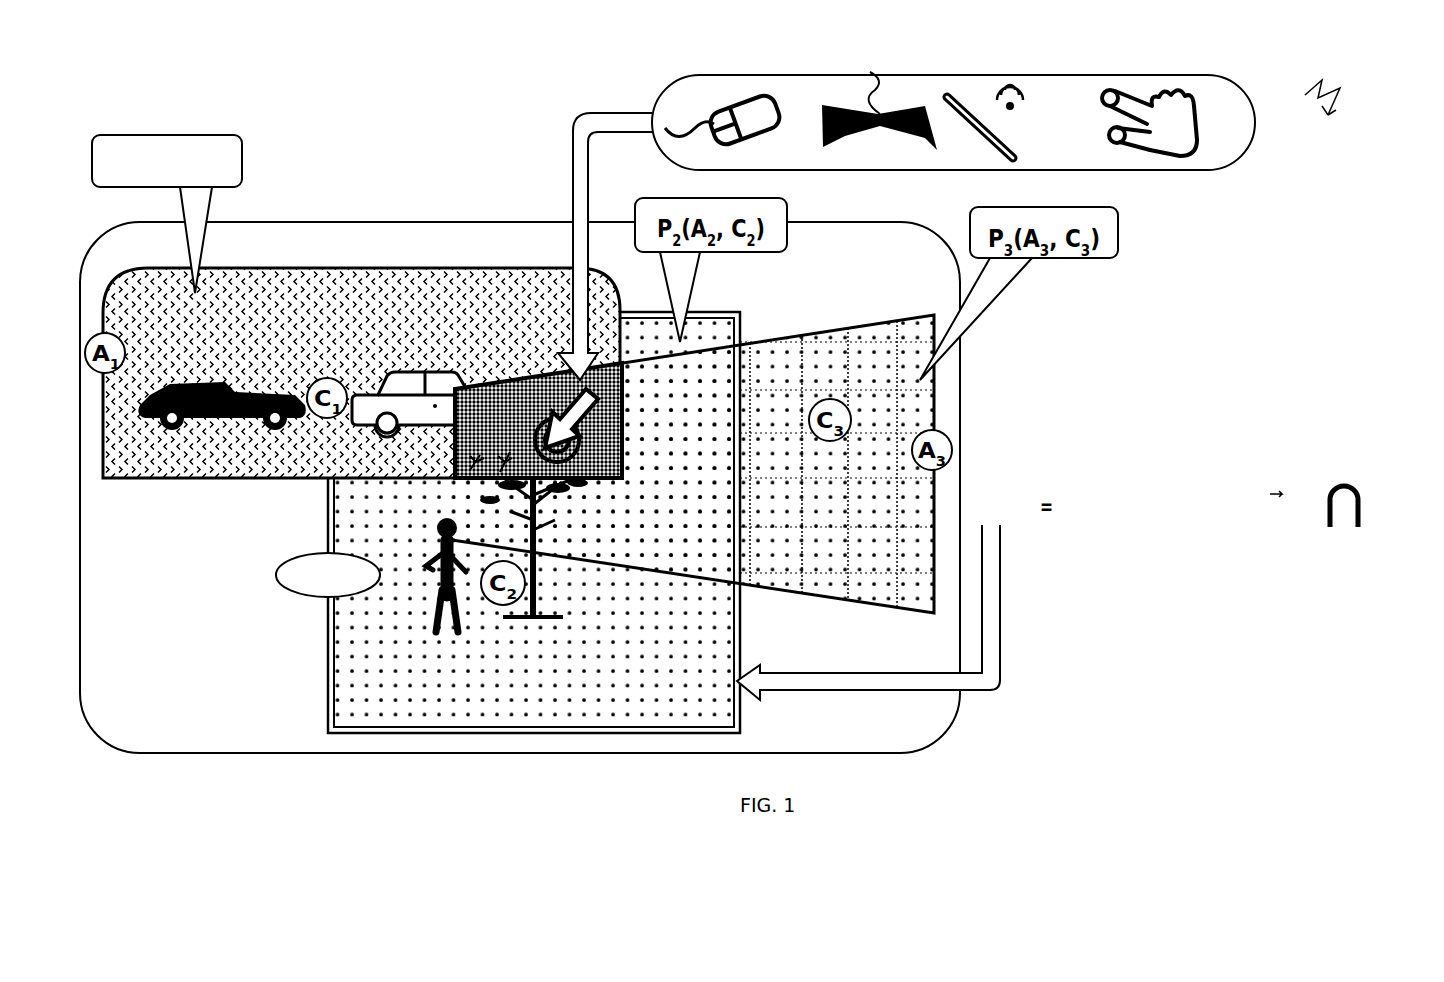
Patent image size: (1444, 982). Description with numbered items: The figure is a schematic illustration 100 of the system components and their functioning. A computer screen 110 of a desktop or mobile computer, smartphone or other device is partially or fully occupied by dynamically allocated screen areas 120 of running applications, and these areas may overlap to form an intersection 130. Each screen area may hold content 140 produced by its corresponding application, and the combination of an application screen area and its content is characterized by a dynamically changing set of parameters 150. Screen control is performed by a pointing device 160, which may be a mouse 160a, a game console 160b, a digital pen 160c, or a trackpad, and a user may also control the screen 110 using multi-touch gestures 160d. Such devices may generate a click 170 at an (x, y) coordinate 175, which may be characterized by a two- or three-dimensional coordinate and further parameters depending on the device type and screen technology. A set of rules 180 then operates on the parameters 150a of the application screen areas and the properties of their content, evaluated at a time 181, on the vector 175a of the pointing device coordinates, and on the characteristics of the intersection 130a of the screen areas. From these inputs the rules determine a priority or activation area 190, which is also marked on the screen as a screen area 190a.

The schematic illustration 100 is at (1322, 87).
The computer screen 110 is at (100, 232).
The dynamically allocated screen areas 120 is at (322, 268).
The intersection 130 is at (537, 415).
The intersection of the screen areas 130a is at (1340, 478).
The content 140 is at (225, 428).
The set of parameters 150 is at (120, 135).
The parameters of the application screen areas 150a is at (1112, 485).
The pointing device 160 is at (927, 158).
The mouse 160a is at (688, 142).
The game console 160b is at (865, 148).
The digital pen 160c is at (958, 152).
The multi-touch gestures 160d is at (1125, 148).
The click 170 is at (557, 378).
The coordinate 175 is at (590, 445).
The vector of pointing device coordinates 175a is at (1280, 485).
The set of rules 180 is at (1072, 485).
The time 181 is at (1252, 490).
The priority or activation area 190 is at (978, 480).
The screen area 190a is at (310, 598).